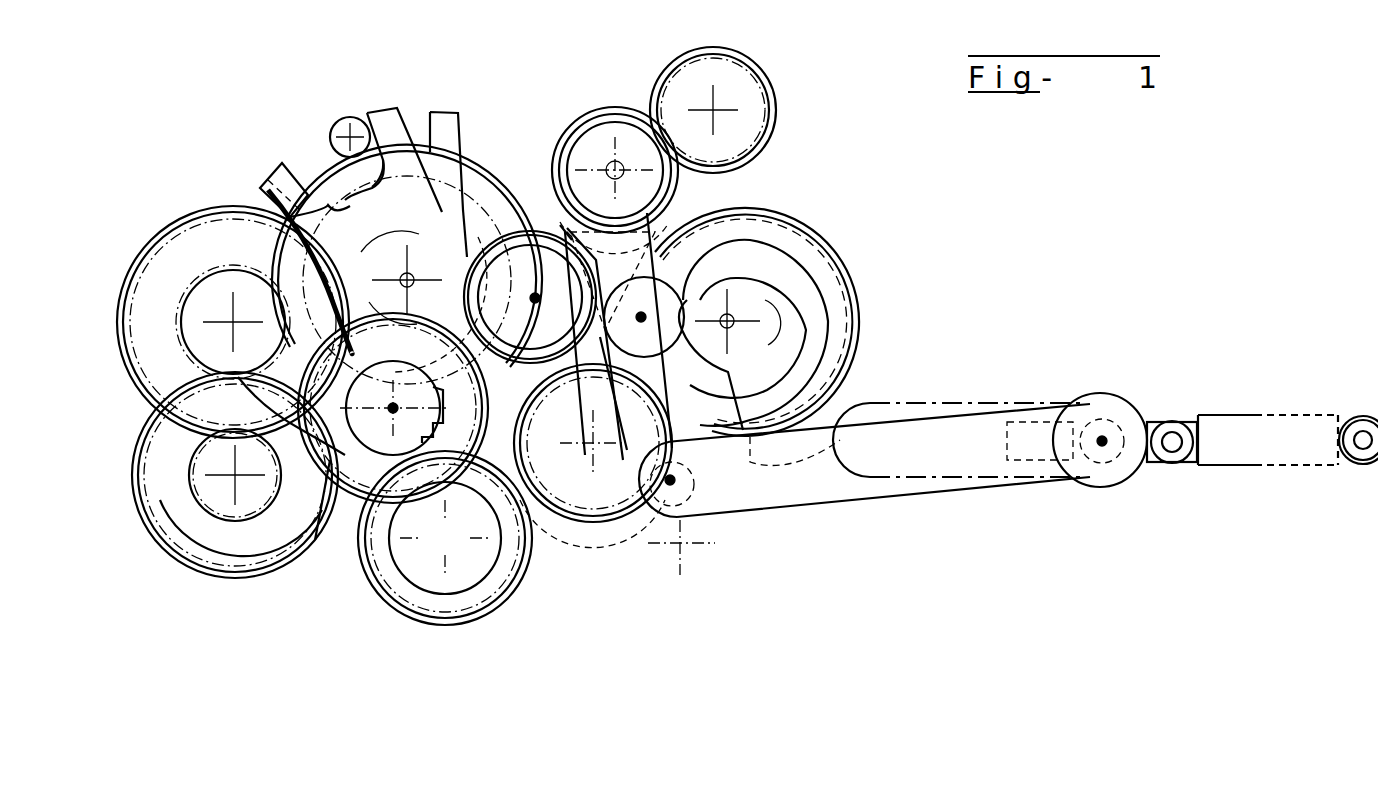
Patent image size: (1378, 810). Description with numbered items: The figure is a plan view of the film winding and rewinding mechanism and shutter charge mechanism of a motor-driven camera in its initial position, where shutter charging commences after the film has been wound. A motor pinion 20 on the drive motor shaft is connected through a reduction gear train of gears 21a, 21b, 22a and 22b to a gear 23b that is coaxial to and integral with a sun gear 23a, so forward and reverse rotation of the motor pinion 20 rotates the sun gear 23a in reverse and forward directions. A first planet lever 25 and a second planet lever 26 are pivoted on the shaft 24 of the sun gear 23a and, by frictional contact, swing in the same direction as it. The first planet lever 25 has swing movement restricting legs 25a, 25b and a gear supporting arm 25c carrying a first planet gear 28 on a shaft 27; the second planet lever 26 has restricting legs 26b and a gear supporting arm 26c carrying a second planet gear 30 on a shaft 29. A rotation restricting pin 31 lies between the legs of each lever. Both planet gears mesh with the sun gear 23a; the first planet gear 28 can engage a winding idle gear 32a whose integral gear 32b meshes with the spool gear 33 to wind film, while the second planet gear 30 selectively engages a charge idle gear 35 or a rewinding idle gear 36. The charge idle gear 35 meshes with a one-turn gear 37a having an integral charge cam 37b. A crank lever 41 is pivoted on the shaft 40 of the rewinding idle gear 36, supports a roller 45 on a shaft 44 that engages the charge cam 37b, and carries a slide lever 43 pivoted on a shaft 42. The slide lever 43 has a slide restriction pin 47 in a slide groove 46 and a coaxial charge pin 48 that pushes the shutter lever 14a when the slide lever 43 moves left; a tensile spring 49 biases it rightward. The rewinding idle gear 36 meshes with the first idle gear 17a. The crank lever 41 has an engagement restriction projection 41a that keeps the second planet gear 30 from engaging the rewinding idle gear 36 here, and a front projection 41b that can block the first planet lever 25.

The shutter lever 14a is at (1012, 420).
The first idle gear 17a is at (776, 108).
The motor pinion 20 is at (357, 555).
The gear 21a is at (240, 580).
The gear 21b is at (172, 500).
The gear 22a is at (133, 392).
The gear 22b is at (193, 278).
The sun gear 23a is at (443, 210).
The gear 23b is at (450, 205).
The shaft 24 is at (353, 200).
The first planet lever 25 is at (380, 112).
The swing movement restricting leg 25a is at (273, 183).
The swing movement restricting leg 25b is at (383, 110).
The gear supporting arm 25c is at (445, 537).
The second planet lever 26 is at (438, 110).
The swing movement restricting leg 26b is at (447, 112).
The gear supporting arm 26c is at (592, 443).
The shaft 27 is at (398, 400).
The first planet gear 28 is at (518, 435).
The shaft 29 is at (533, 298).
The second planet gear 30 is at (478, 372).
The rotation restricting pin 31 is at (340, 118).
The winding idle gear 32a is at (426, 622).
The gear 32b is at (492, 585).
The spool gear 33 is at (318, 545).
The charge idle gear 35 is at (593, 520).
The rewinding idle gear 36 is at (604, 108).
The one-turn gear 37a is at (814, 244).
The charge cam 37b is at (855, 348).
The shaft 40 is at (617, 162).
The crank lever 41 is at (590, 130).
The engagement restriction projection 41a is at (562, 223).
The front projection 41b is at (610, 500).
The shaft 42 is at (668, 488).
The slide lever 43 is at (836, 492).
The shaft 44 is at (671, 375).
The roller 45 is at (690, 262).
The slide groove 46 is at (905, 405).
The slide restriction pin 47 is at (1120, 405).
The charge pin 48 is at (1107, 490).
The tensile spring 49 is at (1235, 415).